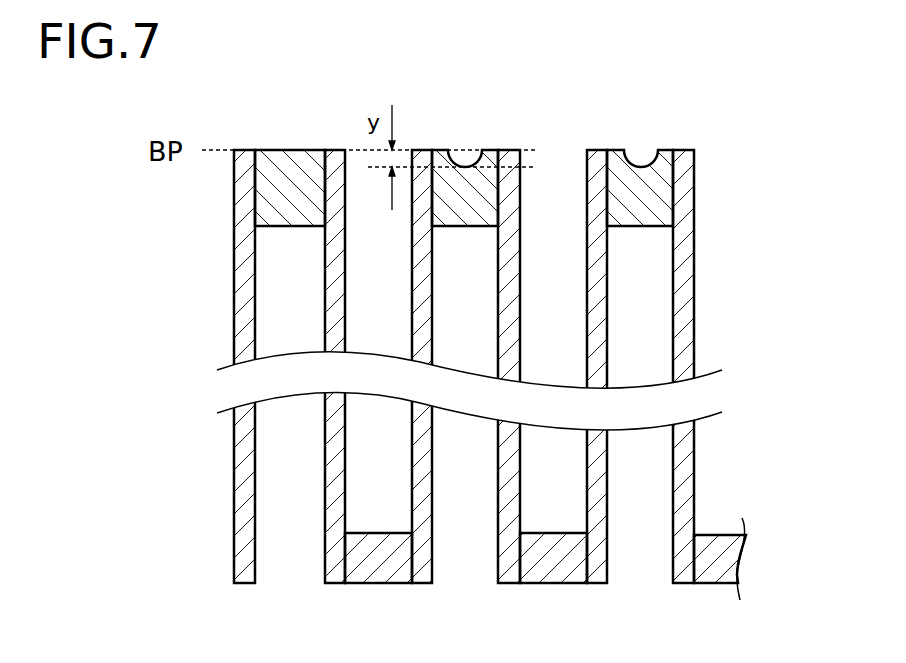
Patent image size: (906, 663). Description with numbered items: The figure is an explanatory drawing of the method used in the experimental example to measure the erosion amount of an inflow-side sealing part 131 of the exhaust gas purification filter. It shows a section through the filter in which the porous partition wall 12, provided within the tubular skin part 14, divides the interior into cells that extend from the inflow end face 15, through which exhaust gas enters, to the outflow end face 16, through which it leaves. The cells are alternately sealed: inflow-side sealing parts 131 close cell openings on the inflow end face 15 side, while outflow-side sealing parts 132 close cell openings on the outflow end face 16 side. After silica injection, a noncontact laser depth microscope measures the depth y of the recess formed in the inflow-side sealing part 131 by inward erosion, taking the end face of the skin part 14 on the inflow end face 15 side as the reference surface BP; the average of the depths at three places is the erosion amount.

The partition wall 12 is at (507, 272).
The skin part 14 is at (237, 271).
The inflow end face 15 is at (337, 150).
The outflow end face 16 is at (422, 583).
The inflow-side sealing part 131 is at (468, 185).
The outflow-side sealing part 132 is at (558, 560).